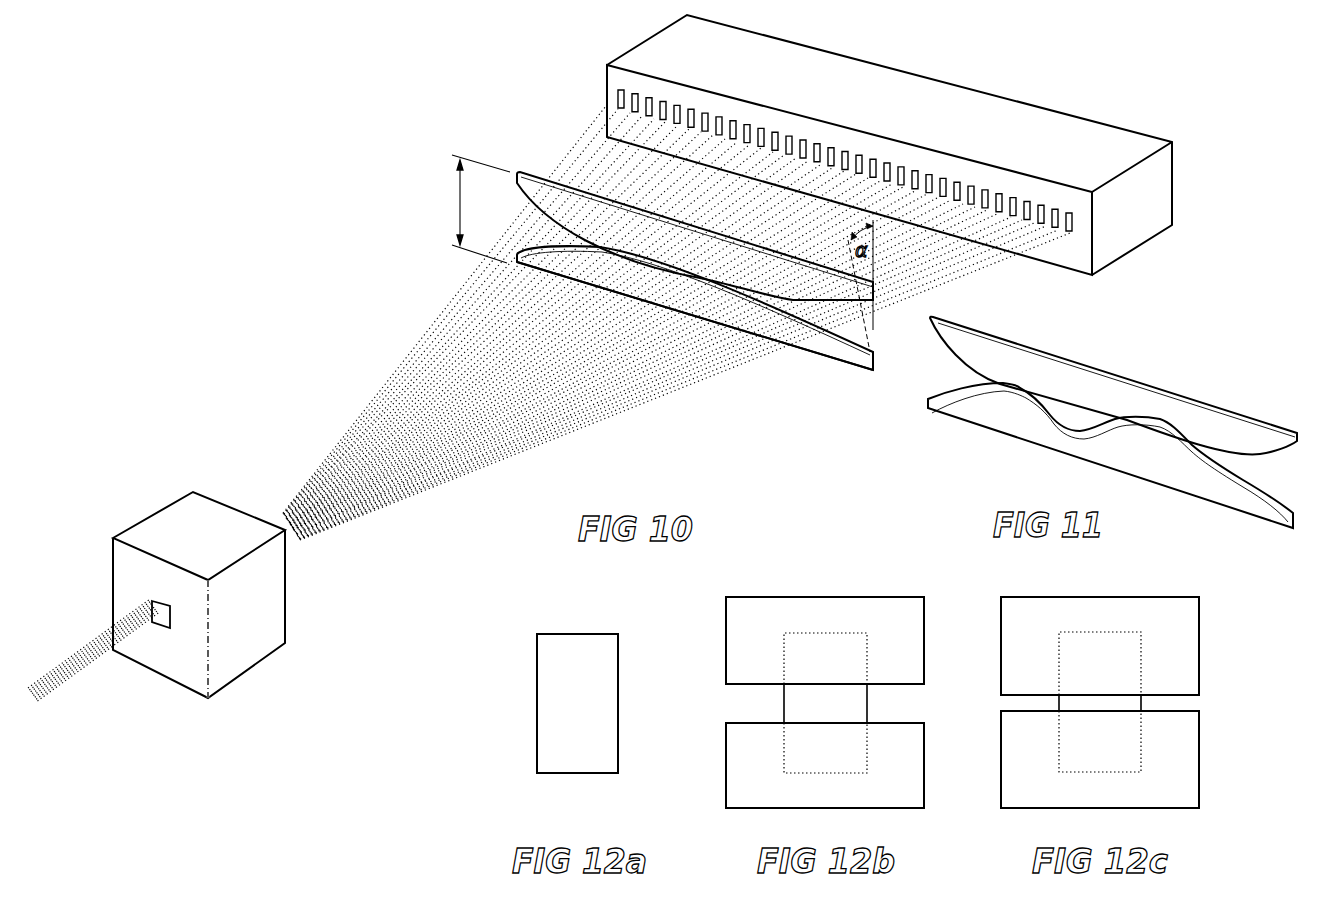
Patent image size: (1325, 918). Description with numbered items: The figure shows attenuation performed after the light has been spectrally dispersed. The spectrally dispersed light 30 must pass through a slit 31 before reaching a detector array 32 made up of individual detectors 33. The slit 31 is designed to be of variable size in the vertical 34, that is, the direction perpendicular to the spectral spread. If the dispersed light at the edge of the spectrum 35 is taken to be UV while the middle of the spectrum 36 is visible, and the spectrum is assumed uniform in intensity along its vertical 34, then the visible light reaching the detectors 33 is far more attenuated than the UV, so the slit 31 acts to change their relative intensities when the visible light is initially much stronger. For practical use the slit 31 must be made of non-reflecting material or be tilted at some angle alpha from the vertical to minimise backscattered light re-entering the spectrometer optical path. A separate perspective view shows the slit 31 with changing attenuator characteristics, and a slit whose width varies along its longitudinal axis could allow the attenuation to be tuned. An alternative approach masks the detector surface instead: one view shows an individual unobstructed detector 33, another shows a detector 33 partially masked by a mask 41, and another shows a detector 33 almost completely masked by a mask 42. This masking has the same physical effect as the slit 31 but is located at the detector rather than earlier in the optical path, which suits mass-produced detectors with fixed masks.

In FIG. 10, the spectrally dispersed light 30 is at (657, 392).
In FIG. 10, the slit 31 is at (578, 275).
In FIG. 11, the slit 31 is at (1110, 390).
In FIG. 10, the detector array 32 is at (1073, 145).
In FIG. 10, the individual detector 33 is at (1003, 193).
In FIG. 12A, the individual detector 33 is at (593, 642).
In FIG. 12B, the individual detector 33 is at (832, 707).
In FIG. 12C, the individual detector 33 is at (1128, 706).
In FIG. 10, the vertical 34 is at (460, 208).
In FIG. 10, the edge of spectrum 35 is at (808, 352).
In FIG. 10, the middle of the spectrum 36 is at (620, 270).
In FIG. 12B, the mask 41 is at (853, 617).
In FIG. 12C, the mask 42 is at (1123, 617).